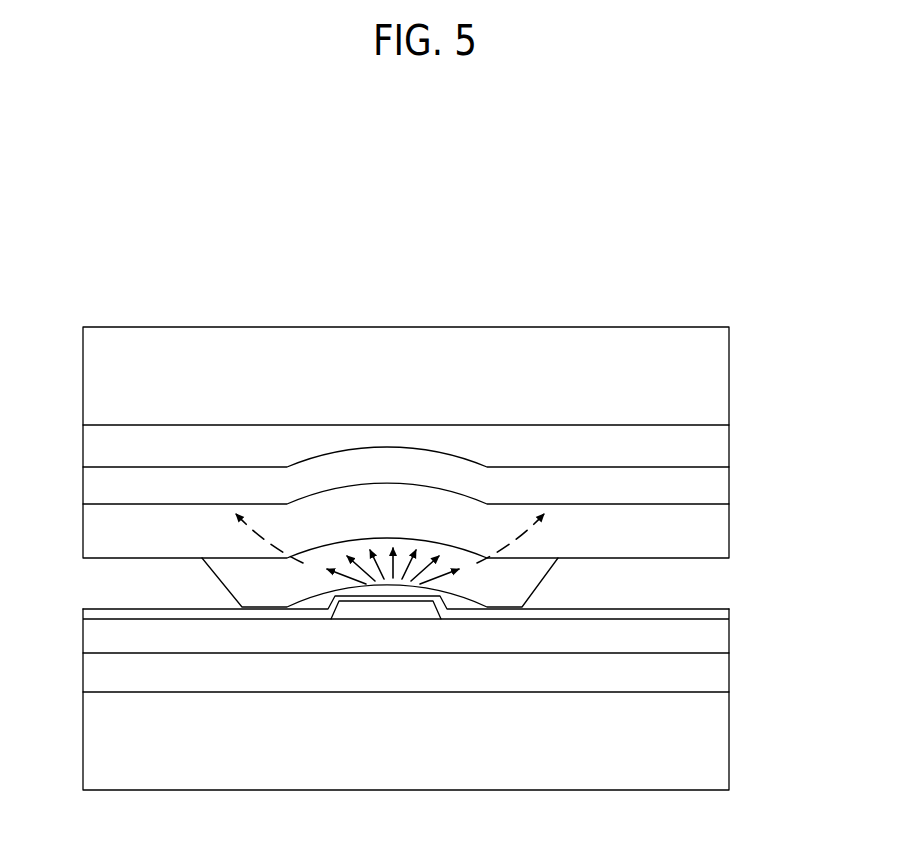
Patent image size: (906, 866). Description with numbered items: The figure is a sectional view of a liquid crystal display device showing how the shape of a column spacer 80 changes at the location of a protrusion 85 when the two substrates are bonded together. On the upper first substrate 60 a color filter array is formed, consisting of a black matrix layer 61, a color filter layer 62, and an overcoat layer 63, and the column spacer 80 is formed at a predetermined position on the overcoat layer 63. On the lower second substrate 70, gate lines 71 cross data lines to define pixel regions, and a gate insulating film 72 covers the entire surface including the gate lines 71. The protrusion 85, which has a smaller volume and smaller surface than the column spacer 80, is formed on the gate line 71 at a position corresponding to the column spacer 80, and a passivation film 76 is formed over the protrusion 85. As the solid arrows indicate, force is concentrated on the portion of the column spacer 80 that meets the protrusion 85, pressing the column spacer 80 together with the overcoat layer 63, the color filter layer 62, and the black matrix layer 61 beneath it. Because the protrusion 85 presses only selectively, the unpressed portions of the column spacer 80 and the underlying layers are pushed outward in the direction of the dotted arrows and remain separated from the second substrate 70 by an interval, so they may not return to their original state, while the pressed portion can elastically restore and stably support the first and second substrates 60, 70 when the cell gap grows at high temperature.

The first substrate 60 is at (713, 373).
The black matrix layer 61 is at (713, 441).
The color filter layer 62 is at (713, 493).
The overcoat layer 63 is at (713, 536).
The second substrate 70 is at (713, 748).
The gate lines 71 is at (713, 675).
The gate insulating film 72 is at (713, 636).
The passivation film 76 is at (713, 611).
The column spacer 80 is at (528, 580).
The protrusion 85 is at (387, 612).